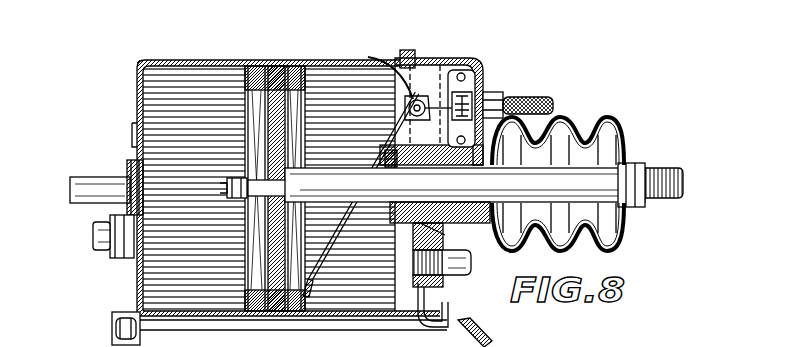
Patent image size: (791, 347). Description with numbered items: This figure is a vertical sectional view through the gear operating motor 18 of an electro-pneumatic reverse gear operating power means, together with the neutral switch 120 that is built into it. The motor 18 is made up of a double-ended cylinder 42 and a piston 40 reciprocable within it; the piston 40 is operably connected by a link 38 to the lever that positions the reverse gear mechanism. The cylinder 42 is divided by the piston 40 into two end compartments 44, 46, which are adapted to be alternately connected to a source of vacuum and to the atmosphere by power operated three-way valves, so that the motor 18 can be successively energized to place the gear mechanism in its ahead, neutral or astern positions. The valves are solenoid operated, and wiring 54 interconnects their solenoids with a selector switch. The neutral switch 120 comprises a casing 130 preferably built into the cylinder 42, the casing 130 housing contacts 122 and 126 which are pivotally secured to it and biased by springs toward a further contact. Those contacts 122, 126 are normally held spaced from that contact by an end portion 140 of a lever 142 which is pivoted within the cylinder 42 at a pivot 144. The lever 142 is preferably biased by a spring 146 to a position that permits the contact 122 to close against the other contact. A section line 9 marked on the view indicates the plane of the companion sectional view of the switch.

The section line 9- 9 is at (465, 52).
The motor 18 is at (130, 272).
The link 38 is at (660, 170).
The piston 40 is at (253, 248).
The double-ended cylinder 42 is at (208, 60).
The end compartment 44 is at (150, 113).
The end compartment 46 is at (325, 76).
The wiring 54 is at (550, 104).
The neutral switch 120 is at (494, 80).
The contact 122 is at (499, 91).
The contact 126 is at (508, 107).
The casing 130 is at (471, 62).
The end portion 140 is at (476, 76).
The lever 142 is at (343, 229).
The pivot 144 is at (381, 65).
The spring 146 is at (424, 74).